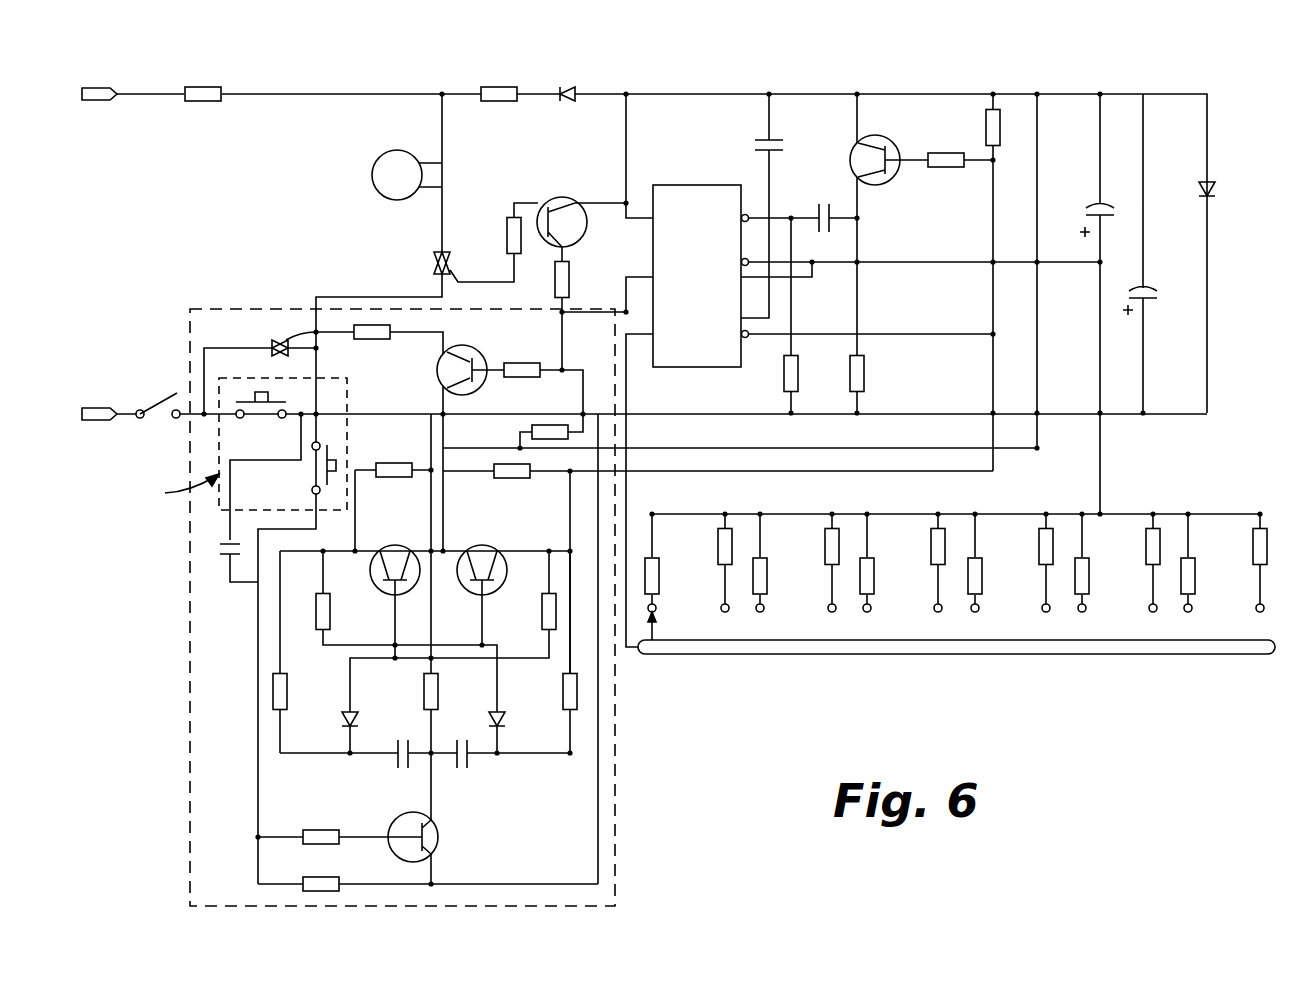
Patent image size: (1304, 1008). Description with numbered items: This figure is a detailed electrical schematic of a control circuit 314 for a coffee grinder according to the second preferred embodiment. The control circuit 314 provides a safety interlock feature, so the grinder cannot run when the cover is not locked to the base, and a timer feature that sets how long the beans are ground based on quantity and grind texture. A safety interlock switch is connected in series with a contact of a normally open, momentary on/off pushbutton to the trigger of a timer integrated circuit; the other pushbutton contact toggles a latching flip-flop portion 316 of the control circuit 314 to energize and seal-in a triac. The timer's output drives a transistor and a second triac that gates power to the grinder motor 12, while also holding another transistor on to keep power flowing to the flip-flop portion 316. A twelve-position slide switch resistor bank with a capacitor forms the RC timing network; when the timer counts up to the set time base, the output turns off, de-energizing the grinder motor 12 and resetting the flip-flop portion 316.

The grinder motor 12 is at (397, 150).
The control circuit 314 is at (693, 489).
The flip-flop portion 316 is at (616, 768).